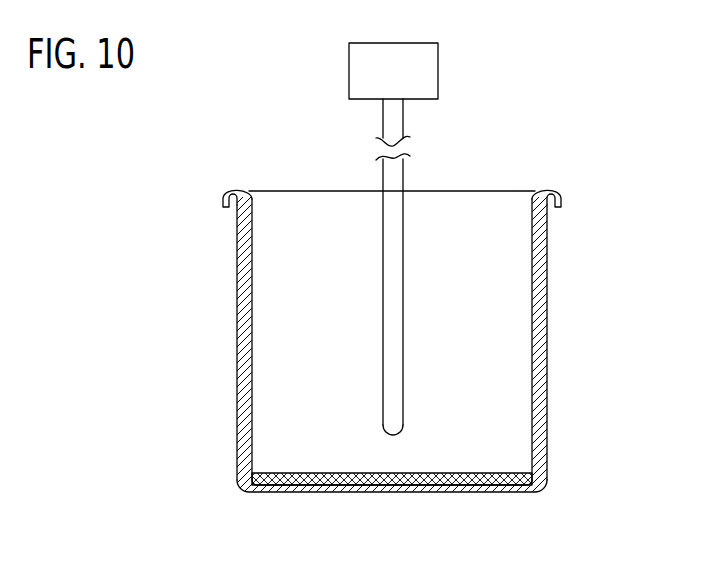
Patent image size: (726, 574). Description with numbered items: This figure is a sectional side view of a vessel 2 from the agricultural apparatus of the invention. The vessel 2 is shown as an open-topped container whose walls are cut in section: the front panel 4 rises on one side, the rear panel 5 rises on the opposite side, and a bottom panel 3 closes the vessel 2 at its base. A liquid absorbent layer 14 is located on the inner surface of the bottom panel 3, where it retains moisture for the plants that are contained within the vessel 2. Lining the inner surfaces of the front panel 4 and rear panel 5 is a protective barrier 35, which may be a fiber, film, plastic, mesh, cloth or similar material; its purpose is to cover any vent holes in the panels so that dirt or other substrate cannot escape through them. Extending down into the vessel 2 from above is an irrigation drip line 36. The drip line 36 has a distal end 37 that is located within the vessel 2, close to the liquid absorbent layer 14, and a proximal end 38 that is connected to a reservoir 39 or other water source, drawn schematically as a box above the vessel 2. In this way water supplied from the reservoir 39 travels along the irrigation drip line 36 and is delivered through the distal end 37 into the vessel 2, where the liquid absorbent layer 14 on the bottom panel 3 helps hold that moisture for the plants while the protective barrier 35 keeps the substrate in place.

The vessel 2 is at (425, 351).
The bottom panel 3 is at (392, 492).
The front panel 4 is at (237, 297).
The rear panel 5 is at (547, 386).
The liquid absorbent layer 14 is at (304, 473).
The protective barrier 35 is at (252, 341).
The irrigation drip line 36 is at (403, 278).
The distal end 37 is at (393, 426).
The proximal end 38 is at (392, 108).
The reservoir 39 is at (407, 81).